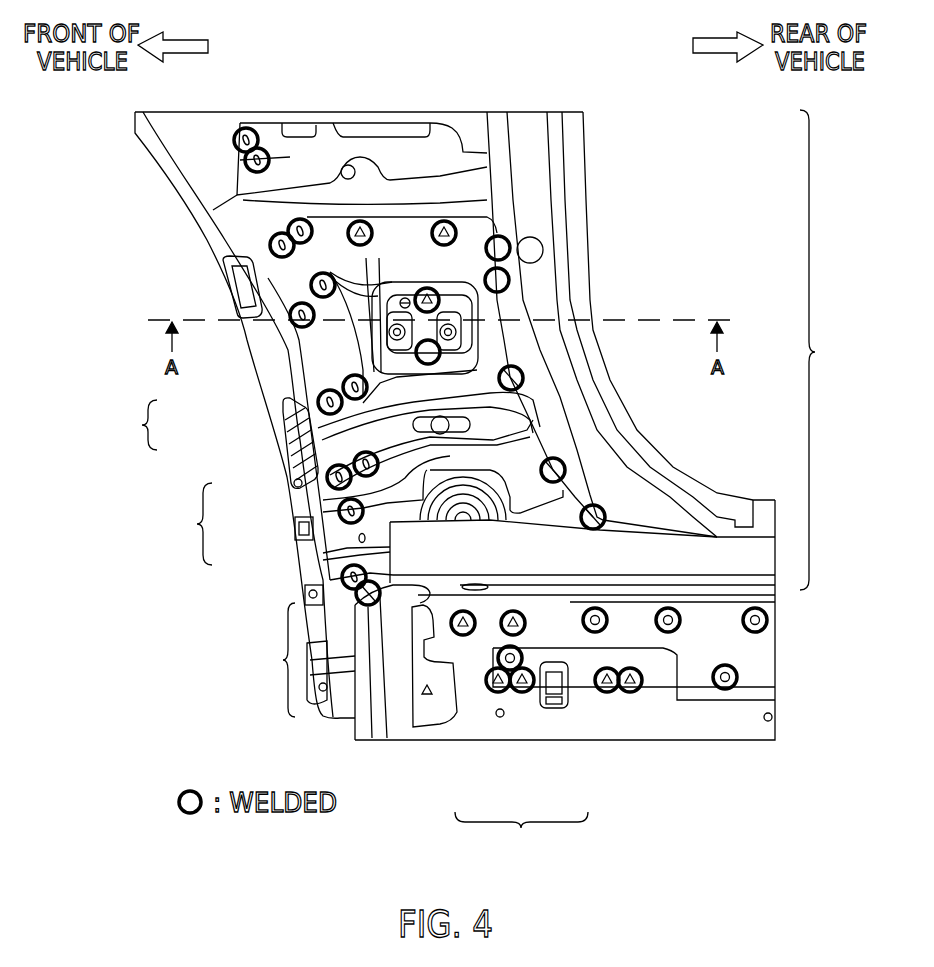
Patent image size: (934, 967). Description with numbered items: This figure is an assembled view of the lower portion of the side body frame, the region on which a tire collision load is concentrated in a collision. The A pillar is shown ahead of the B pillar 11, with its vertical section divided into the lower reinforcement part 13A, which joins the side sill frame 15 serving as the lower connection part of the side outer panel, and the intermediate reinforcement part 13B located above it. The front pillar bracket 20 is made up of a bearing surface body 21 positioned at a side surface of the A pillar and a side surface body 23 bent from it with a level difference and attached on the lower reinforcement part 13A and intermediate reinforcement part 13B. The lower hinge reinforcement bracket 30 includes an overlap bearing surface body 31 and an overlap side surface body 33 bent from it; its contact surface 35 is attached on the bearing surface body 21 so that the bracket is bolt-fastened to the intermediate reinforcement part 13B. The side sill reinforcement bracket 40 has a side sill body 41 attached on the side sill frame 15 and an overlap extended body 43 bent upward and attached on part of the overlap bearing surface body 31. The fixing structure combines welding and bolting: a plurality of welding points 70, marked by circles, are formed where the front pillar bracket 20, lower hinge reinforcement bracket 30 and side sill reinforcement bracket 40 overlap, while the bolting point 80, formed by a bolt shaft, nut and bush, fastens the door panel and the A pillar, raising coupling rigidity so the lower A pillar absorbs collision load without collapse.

The B pillar 11 is at (530, 130).
The lower reinforcement part 13A is at (293, 662).
The intermediate reinforcement part 13B is at (607, 425).
The side sill frame 15 is at (748, 718).
The front pillar bracket 20 is at (132, 425).
The bearing surface body 21 is at (317, 352).
The side surface body 23 is at (290, 392).
The lower hinge reinforcement bracket 30 is at (188, 524).
The overlap bearing surface body 31 is at (323, 555).
The overlap side surface body 33 is at (287, 478).
The contact surface 35 is at (457, 352).
The side sill reinforcement bracket 40 is at (521, 834).
The side sill body 41 is at (590, 668).
The overlap extended body 43 is at (440, 558).
The welding points 70 is at (597, 522).
The bolting point 80 is at (448, 324).